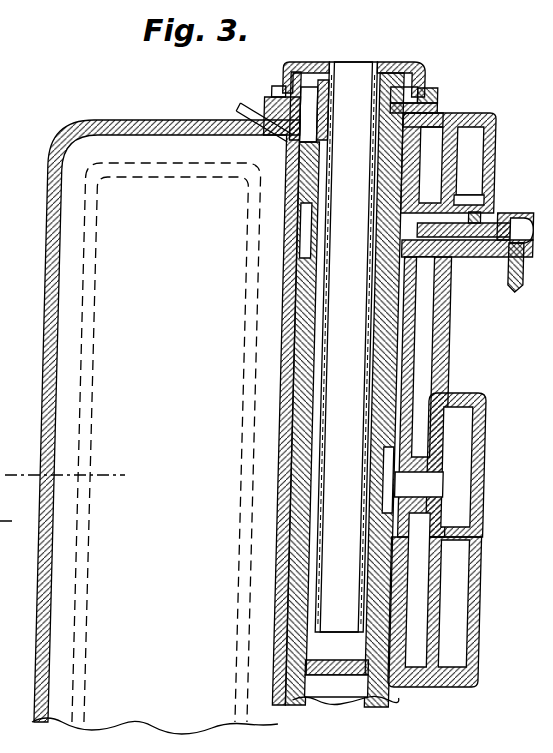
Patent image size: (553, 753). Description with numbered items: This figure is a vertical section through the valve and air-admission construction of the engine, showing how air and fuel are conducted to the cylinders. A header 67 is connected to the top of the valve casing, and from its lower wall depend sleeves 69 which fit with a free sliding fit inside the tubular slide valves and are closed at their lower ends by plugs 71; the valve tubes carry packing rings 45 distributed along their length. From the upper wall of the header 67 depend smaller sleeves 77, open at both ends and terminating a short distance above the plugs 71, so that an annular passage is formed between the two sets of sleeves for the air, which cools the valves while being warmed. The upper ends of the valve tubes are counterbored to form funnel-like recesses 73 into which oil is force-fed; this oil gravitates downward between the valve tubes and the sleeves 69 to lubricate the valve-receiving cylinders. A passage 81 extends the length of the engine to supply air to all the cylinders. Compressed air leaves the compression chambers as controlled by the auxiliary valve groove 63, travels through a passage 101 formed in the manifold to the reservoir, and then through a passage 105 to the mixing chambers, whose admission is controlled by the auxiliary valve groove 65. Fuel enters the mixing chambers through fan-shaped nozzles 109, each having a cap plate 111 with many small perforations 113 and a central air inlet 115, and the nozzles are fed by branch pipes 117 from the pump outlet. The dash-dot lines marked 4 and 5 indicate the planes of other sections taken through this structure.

The vessel (section line 4-4) 4 is at (112, 220).
The passage (section line 5-5) 5 is at (417, 485).
The packing rings 45 is at (395, 307).
The circumferential groove 63 is at (390, 460).
The circumferential groove 65 is at (302, 232).
The header 67 is at (402, 65).
The sleeves 69 is at (412, 98).
The plugs 71 is at (322, 670).
The funnel-like recesses 73 is at (442, 114).
The sleeves 77 is at (319, 70).
The passage 81 is at (453, 615).
The passage 101 is at (460, 440).
The passage 105 is at (470, 153).
The nozzles 109 is at (467, 240).
The cap plate 111 is at (502, 213).
The perforations 113 is at (453, 208).
The air inlet 115 is at (480, 215).
The branch pipes 117 is at (516, 278).